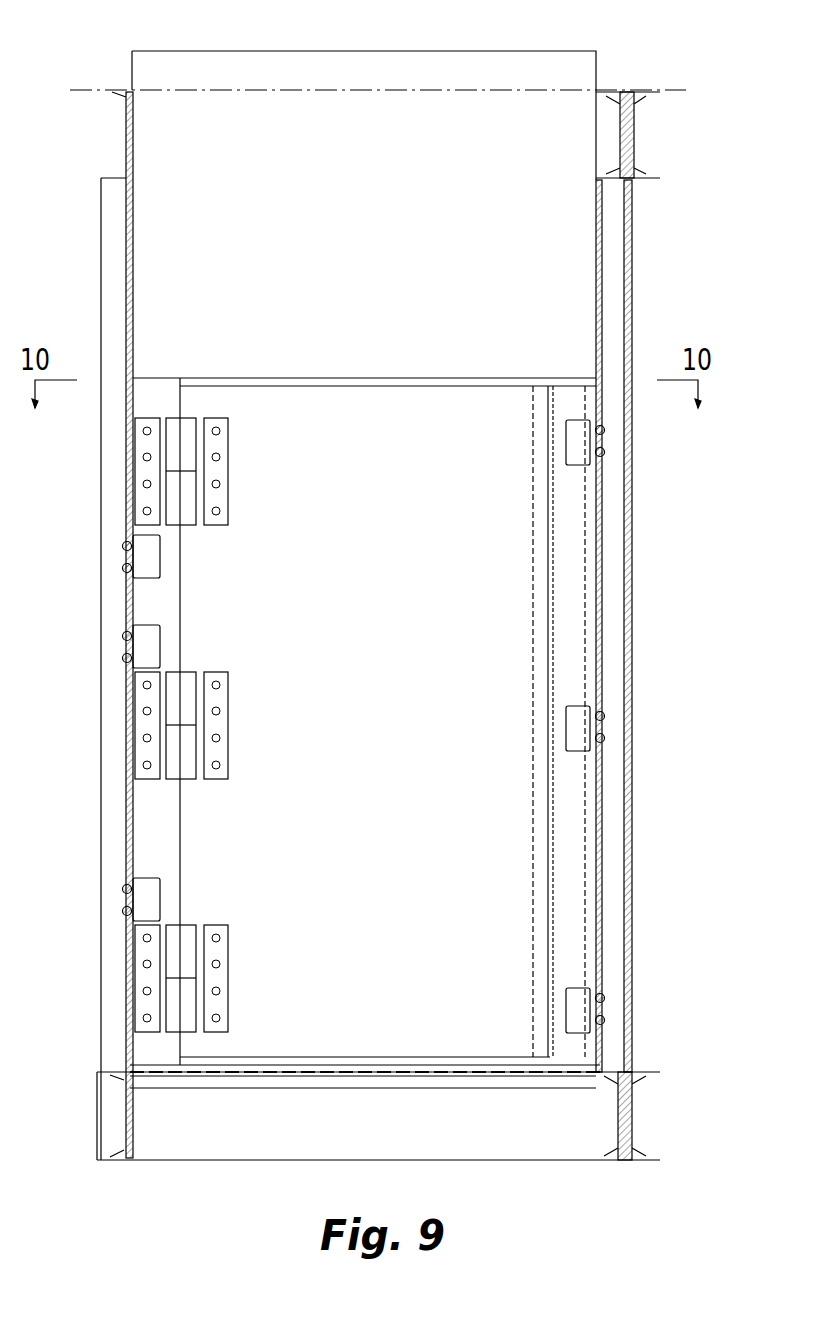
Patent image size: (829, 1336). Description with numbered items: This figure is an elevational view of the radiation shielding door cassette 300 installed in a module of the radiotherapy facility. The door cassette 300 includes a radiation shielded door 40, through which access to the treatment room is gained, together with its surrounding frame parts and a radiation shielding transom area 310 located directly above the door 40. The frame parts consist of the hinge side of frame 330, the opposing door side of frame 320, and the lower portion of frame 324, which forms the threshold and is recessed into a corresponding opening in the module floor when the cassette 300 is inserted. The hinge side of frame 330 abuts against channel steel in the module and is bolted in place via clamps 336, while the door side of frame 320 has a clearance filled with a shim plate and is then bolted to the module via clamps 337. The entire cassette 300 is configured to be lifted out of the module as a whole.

The door cassette 300 is at (617, 46).
The radiation shielding transom area 310 is at (300, 155).
The door side of frame 320 is at (572, 622).
The radiation shielded door 40 is at (420, 575).
The lower portion of frame 324 is at (570, 1080).
The hinge side of frame 330 is at (150, 597).
The clamps 336 is at (145, 893).
The clamps 337 is at (575, 735).